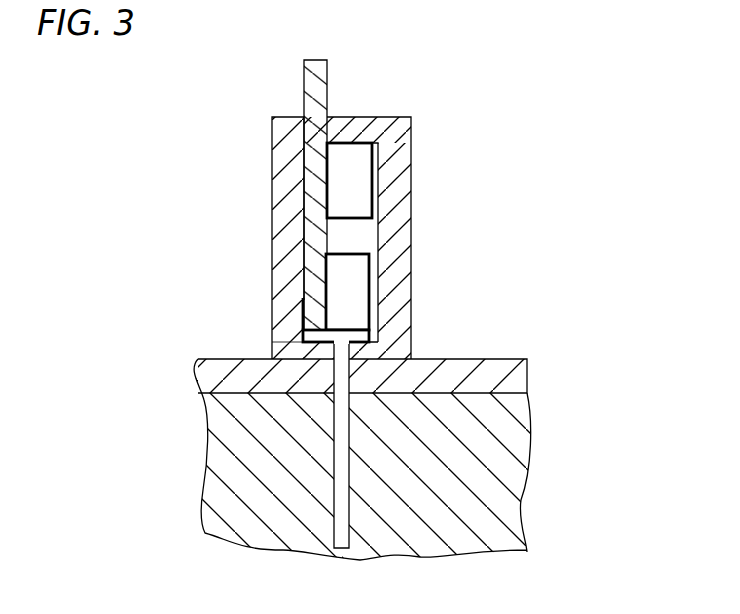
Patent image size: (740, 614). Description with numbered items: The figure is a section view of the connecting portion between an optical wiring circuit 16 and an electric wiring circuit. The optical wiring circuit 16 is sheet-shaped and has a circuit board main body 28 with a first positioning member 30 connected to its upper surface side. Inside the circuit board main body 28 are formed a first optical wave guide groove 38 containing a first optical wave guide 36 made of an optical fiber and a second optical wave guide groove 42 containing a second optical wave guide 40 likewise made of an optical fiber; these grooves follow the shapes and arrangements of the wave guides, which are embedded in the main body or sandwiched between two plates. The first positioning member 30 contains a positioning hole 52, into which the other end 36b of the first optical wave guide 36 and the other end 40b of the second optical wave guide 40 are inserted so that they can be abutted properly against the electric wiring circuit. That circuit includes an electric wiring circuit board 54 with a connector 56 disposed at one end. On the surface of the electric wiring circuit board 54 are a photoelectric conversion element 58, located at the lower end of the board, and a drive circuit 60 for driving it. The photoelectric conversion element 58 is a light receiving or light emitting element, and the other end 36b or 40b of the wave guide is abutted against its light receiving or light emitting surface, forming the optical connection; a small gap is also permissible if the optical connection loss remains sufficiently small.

The optical wiring circuit 16 is at (365, 451).
The circuit board main body 28 is at (240, 466).
The first positioning member 30 is at (513, 380).
The first optical wave guide 36 is at (477, 445).
The second optical wave guide 40 is at (342, 456).
The other end of the first optical wave guide 36b is at (413, 314).
The other end of the second optical wave guide 40b is at (342, 342).
The first optical wave guide groove 38 is at (229, 470).
The second optical wave guide groove 42 is at (342, 508).
The positioning hole 52 is at (333, 329).
The electric wiring circuit board 54 is at (313, 173).
The connector 56 is at (408, 140).
The photoelectric conversion element 58 is at (355, 267).
The drive circuit 60 is at (355, 197).